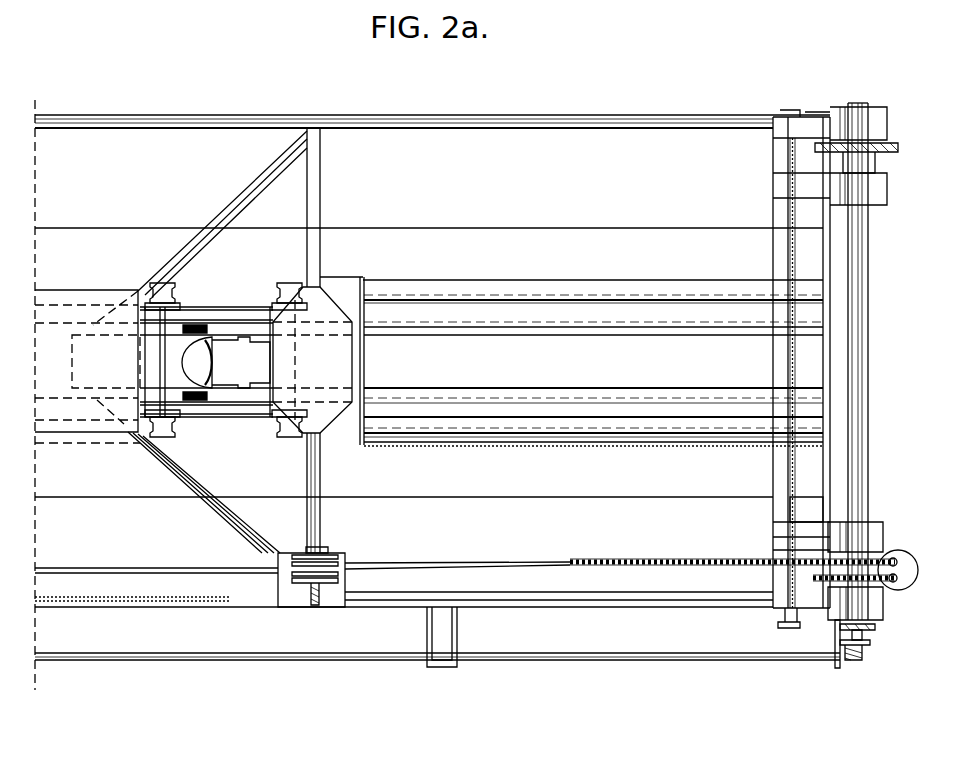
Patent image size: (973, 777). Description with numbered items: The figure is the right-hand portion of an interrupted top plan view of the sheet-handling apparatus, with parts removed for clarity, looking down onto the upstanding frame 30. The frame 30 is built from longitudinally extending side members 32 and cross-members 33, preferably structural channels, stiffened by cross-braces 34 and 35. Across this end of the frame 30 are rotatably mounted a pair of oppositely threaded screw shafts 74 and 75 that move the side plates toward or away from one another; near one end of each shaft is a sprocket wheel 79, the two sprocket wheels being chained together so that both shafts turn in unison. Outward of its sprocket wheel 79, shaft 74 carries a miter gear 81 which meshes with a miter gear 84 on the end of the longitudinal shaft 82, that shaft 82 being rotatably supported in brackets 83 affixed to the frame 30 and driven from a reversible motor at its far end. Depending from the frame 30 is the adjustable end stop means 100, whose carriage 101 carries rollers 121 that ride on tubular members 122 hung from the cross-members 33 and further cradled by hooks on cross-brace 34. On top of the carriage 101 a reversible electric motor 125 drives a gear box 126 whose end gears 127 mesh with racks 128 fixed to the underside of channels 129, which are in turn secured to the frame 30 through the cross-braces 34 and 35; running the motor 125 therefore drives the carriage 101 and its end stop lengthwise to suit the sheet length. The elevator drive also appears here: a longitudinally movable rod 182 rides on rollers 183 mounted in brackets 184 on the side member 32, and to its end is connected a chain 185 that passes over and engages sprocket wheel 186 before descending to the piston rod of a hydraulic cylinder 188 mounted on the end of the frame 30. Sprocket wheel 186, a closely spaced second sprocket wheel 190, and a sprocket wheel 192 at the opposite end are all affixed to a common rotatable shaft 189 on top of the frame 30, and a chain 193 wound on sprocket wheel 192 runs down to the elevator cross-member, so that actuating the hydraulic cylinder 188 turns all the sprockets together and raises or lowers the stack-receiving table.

The upstanding frame 30 is at (568, 112).
The side member 32 is at (465, 113).
The cross-member 33 is at (772, 512).
The cross-brace 34 is at (321, 200).
The cross-brace 35 is at (253, 188).
The screw threaded shaft 74 is at (793, 222).
The screw threaded shaft 75 is at (865, 639).
The sprocket wheel 79 is at (776, 621).
The miter gear 81 is at (856, 656).
The shaft 82 is at (263, 662).
The bracket 83 is at (447, 667).
The miter gear 84 is at (838, 669).
The adjustable end stop means 100 is at (250, 452).
The carriage 101 is at (352, 444).
The roller 121 is at (158, 290).
The tubular member 122 is at (487, 292).
The electric motor 125 is at (224, 362).
The gear box 126 is at (216, 362).
The gear 127 is at (200, 322).
The rack 128 is at (256, 333).
The channel 129 is at (593, 392).
The longitudinally movable rod 182 is at (536, 566).
The roller 183 is at (346, 557).
The bracket 184 is at (318, 608).
The chain 185 is at (676, 565).
The sprocket wheel 186 is at (888, 549).
The hydraulic cylinder 188 is at (918, 572).
The rotatable shaft 189 is at (868, 425).
The sprocket wheel 190 is at (885, 596).
The sprocket wheel 192 is at (890, 154).
The chain 193 is at (813, 147).